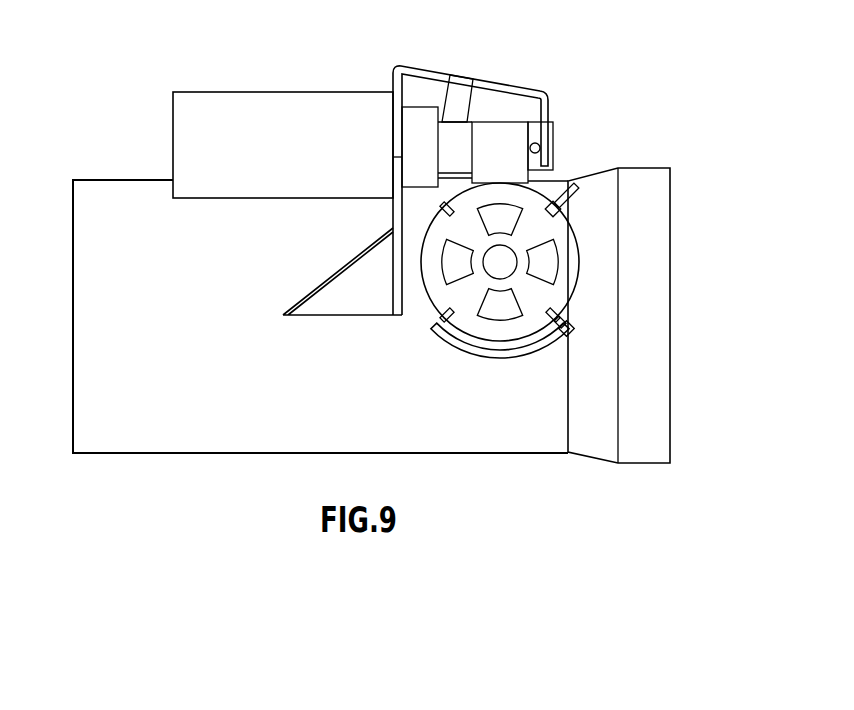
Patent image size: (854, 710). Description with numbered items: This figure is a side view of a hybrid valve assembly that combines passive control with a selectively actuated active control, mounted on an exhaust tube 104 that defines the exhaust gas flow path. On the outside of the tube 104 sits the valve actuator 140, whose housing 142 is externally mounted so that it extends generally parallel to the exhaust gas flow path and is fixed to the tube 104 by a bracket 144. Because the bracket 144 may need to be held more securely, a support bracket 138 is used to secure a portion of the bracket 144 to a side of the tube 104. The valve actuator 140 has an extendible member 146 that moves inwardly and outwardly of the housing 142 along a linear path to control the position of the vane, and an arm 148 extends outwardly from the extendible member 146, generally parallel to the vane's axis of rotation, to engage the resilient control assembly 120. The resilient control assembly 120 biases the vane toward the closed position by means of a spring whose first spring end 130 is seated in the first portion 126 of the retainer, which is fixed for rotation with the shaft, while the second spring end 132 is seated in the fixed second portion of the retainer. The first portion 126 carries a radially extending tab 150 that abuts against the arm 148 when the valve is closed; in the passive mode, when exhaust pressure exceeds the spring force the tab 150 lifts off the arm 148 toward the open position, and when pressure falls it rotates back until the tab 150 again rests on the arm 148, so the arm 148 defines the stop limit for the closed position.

The exhaust tube 104 is at (138, 197).
The resilient control assembly 120 is at (593, 265).
The first portion of the retainer 126 is at (533, 336).
The first spring end 130 is at (573, 334).
The second spring end 132 is at (576, 181).
The support bracket 138 is at (366, 296).
The valve actuator 140 is at (406, 170).
The housing 142 is at (290, 154).
The bracket 144 is at (521, 90).
The extendible member 146 is at (553, 151).
The arm 148 is at (539, 146).
The radially extending tab 150 is at (501, 138).